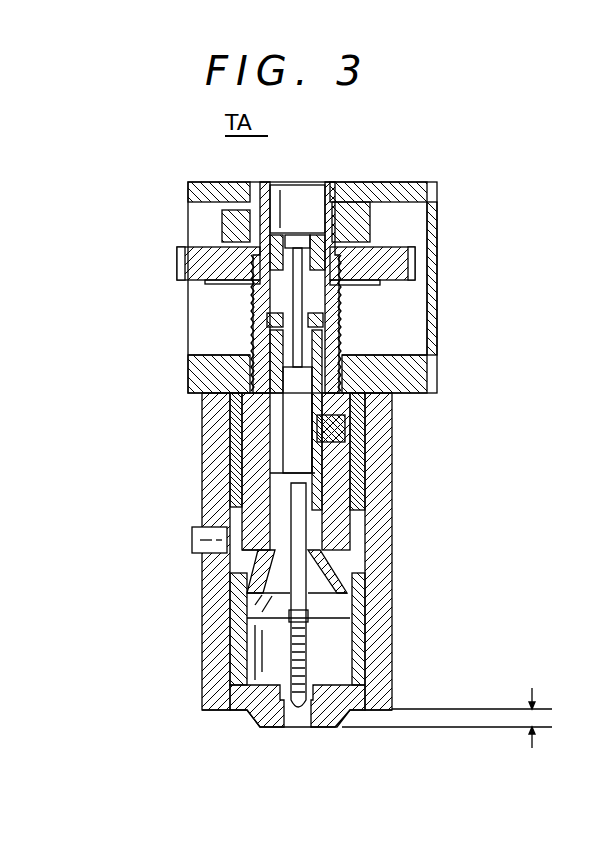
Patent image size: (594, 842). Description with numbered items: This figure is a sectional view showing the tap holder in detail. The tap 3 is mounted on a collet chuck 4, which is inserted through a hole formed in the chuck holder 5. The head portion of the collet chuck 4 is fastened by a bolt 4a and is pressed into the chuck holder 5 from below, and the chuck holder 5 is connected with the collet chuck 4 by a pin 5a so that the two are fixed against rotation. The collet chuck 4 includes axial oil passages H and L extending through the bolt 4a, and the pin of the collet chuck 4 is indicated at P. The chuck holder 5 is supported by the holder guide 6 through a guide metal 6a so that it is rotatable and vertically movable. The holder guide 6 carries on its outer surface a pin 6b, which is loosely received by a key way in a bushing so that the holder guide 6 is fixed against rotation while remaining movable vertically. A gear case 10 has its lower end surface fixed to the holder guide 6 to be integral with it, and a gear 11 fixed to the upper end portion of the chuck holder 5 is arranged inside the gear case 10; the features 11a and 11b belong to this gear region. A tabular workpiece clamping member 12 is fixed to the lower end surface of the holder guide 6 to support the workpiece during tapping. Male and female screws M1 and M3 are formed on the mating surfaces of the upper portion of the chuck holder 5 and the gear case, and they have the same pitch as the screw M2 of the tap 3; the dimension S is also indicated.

The gear case 10 is at (425, 384).
The gear 11 is at (380, 287).
The flange 11a is at (357, 263).
The cap top wall 11b is at (385, 195).
The axial oil passage L is at (345, 328).
The collet chuck 4 is at (318, 573).
The bolt 4a is at (235, 233).
The male screw M1 is at (252, 313).
The screw of the tap M2 is at (285, 657).
The female screw M3 is at (238, 375).
The pin of the collet chuck P is at (245, 478).
The axial oil passage H is at (305, 462).
The chuck holder 5 is at (347, 533).
The pin 5a is at (330, 433).
The holder guide 6 is at (215, 432).
The guide metal 6a is at (358, 647).
The pin 6b is at (188, 542).
The workpiece clamping member 12 is at (260, 722).
The tap 3 is at (295, 713).
The stroke S is at (456, 718).